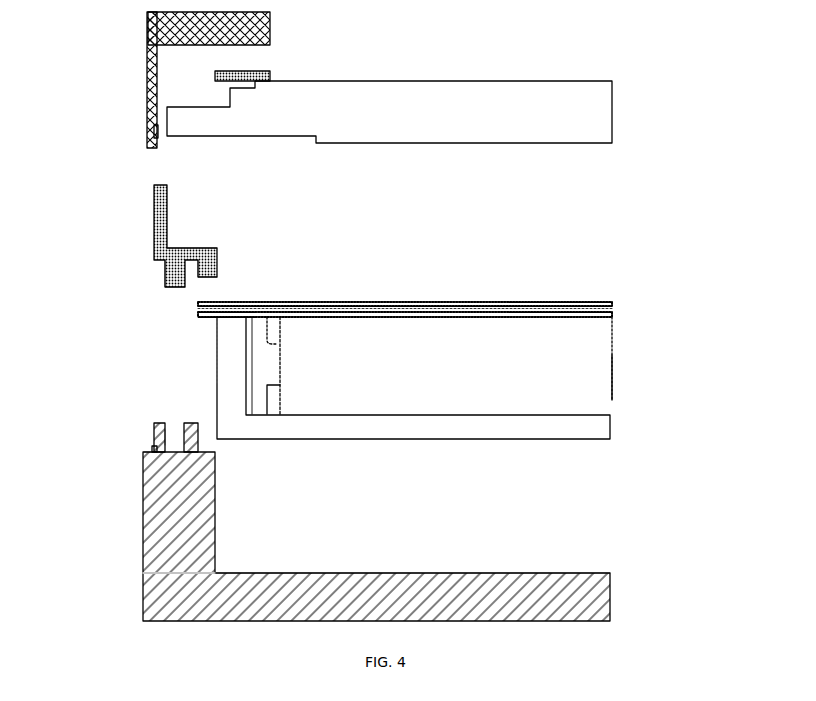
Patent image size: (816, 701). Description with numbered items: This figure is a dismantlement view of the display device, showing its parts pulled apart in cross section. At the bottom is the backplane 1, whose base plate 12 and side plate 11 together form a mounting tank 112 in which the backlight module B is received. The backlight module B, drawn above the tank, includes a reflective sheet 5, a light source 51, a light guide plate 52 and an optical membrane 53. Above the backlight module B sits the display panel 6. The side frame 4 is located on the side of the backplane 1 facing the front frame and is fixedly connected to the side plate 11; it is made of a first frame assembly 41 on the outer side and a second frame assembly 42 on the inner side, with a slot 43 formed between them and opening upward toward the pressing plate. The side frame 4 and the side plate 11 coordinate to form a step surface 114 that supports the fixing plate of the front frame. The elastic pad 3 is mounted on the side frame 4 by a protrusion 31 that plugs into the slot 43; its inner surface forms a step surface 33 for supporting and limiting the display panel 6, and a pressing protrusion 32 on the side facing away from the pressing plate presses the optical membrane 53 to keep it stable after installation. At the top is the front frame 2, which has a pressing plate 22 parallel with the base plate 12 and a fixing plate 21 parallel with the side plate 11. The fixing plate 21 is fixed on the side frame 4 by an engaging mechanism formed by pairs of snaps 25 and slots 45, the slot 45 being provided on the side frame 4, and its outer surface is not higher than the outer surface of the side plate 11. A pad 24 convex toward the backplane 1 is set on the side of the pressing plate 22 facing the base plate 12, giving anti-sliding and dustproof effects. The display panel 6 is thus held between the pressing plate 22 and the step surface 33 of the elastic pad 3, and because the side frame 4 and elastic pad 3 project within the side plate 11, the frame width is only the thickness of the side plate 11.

The backplane 1 is at (419, 528).
The side plate 11 is at (155, 520).
The base plate 12 is at (290, 600).
The mounting tank 112 is at (387, 534).
The step surface 114 is at (152, 450).
The front frame 2 is at (182, 80).
The fixing plate 21 is at (110, 28).
The pressing plate 22 is at (148, 34).
The pad 24 is at (268, 71).
The snap 25 is at (152, 127).
The elastic pad 3 is at (252, 225).
The protrusion 31 is at (188, 248).
The pressing protrusion 32 is at (216, 267).
The step surface 33 is at (177, 267).
The side frame 4 is at (123, 409).
The first frame assembly 41 is at (173, 438).
The second frame assembly 42 is at (188, 423).
The slot 43 is at (165, 438).
The slot 45 is at (157, 440).
The reflective sheet 5 is at (430, 357).
The light source 51 is at (263, 367).
The light guide plate 52 is at (613, 370).
The optical membrane 53 is at (610, 310).
The display panel 6 is at (612, 117).
The backlight module B is at (644, 290).